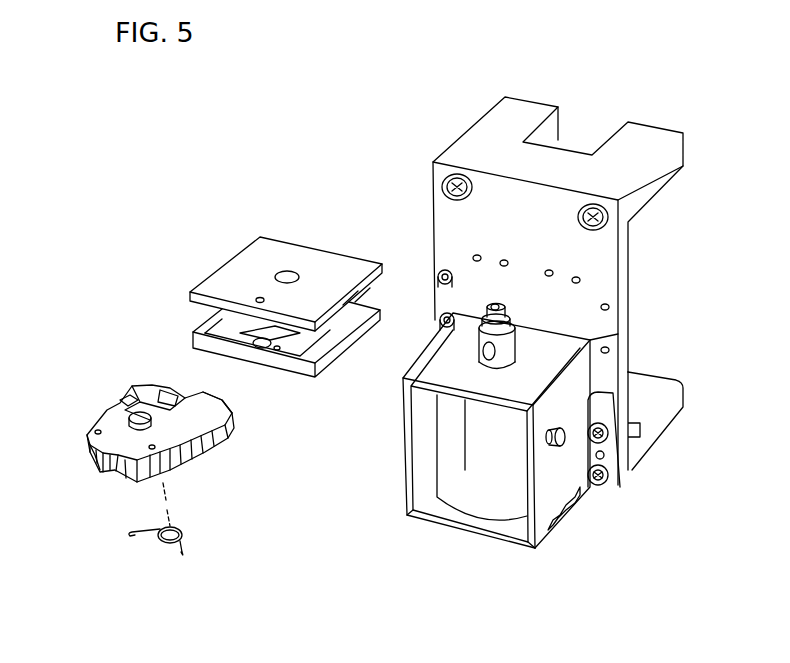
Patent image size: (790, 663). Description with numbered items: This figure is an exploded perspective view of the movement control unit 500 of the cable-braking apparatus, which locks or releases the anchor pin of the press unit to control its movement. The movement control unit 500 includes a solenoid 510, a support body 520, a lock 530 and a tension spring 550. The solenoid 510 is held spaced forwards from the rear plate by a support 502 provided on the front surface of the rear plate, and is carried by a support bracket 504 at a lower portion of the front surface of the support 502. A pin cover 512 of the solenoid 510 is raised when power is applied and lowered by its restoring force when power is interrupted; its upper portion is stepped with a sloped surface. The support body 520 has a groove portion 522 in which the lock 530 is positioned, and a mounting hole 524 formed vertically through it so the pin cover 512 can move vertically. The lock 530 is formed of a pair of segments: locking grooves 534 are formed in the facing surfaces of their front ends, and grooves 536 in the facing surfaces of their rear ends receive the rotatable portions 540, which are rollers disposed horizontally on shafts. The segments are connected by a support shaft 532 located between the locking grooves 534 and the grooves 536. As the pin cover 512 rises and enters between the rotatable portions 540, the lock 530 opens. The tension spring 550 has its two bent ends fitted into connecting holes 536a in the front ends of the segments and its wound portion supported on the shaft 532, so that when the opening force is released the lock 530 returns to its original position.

The movement control unit 500 is at (396, 498).
The support 502 is at (608, 272).
The support bracket 504 is at (553, 485).
The solenoid 510 is at (477, 500).
The pin cover 512 is at (477, 346).
The support body 520 is at (236, 276).
The groove portion 522 is at (336, 332).
The mounting hole 524 is at (290, 270).
The lock 530 is at (208, 458).
The support shaft 532 is at (127, 397).
The locking grooves 534 is at (95, 475).
The grooves 536 is at (148, 390).
The connecting holes 536a is at (93, 430).
The rotatable portions 540 is at (233, 400).
The tension spring 550 is at (187, 545).